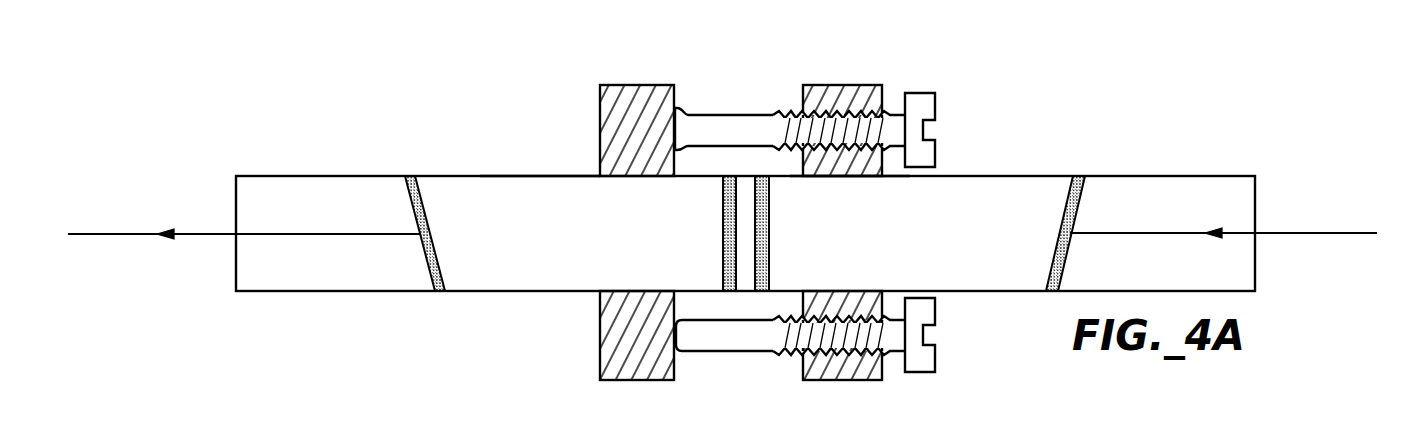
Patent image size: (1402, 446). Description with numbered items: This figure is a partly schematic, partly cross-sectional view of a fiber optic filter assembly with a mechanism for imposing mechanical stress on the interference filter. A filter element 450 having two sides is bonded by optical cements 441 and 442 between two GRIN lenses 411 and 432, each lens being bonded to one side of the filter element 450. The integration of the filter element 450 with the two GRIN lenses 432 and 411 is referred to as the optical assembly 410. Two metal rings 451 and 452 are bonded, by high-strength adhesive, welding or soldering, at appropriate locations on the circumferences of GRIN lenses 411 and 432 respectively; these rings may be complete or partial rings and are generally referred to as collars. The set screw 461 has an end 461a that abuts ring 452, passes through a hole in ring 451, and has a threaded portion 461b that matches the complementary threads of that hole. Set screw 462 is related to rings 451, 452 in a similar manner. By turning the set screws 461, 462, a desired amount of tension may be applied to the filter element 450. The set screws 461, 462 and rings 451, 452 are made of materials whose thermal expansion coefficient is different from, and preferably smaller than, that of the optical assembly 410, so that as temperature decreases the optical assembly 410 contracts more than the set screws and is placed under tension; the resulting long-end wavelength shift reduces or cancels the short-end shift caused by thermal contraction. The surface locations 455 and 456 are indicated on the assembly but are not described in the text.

The optical assembly 410 is at (722, 222).
The GRIN lens 411 is at (972, 174).
The GRIN lens 432 is at (515, 174).
The optical cement 441 is at (721, 238).
The optical cement 442 is at (771, 236).
The filter element 450 is at (747, 294).
The metal ring 451 is at (868, 83).
The metal ring 452 is at (620, 84).
The substrate surface 455 is at (852, 178).
The substrate surface 456 is at (597, 174).
The set screw 461 is at (779, 97).
The end 461a is at (683, 108).
The threaded portion 461b is at (806, 110).
The set screw 462 is at (723, 352).